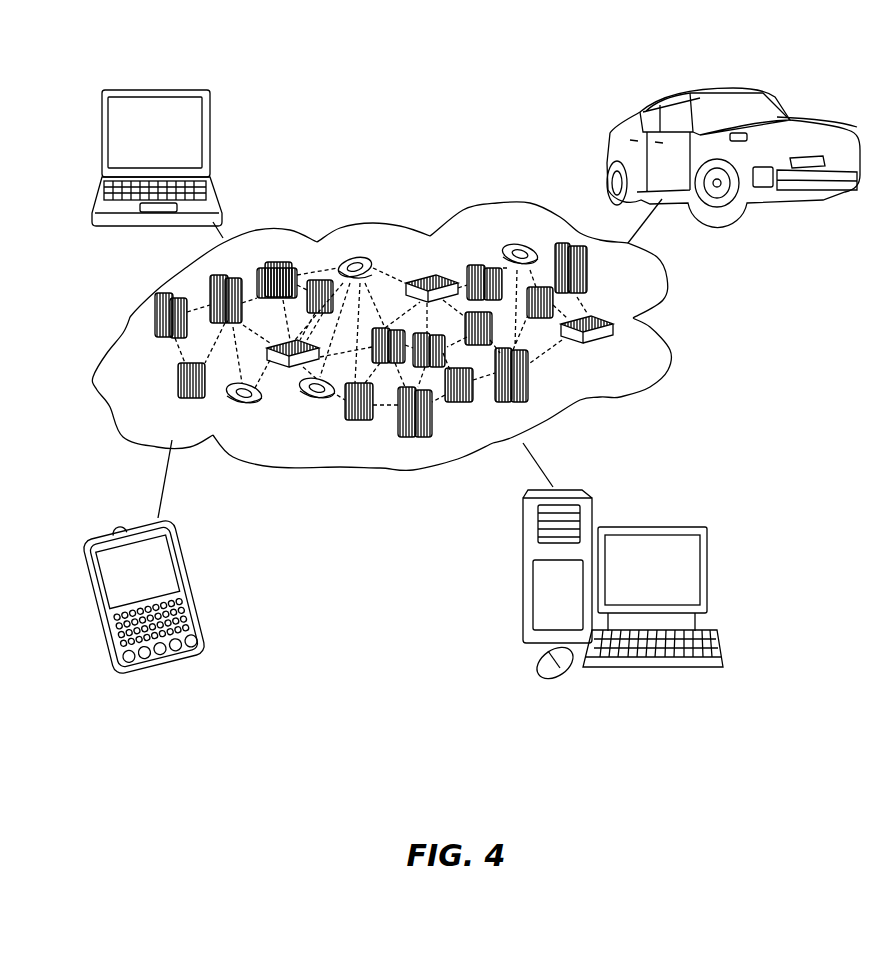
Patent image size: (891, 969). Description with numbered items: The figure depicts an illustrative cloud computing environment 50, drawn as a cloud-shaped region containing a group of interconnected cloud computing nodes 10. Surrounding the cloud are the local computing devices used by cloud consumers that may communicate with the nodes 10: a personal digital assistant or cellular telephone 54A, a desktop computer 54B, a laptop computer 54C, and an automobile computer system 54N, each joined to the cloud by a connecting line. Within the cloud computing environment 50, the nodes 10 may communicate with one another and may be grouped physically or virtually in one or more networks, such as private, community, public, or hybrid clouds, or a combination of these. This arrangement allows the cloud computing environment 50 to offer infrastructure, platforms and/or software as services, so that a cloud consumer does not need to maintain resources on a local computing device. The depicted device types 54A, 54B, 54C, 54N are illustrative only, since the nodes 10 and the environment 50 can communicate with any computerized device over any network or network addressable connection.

The cloud computing node 10 is at (630, 365).
The cloud computing environment 50 is at (668, 278).
The personal digital assistant or cellular telephone 54A is at (188, 567).
The desktop computer 54B is at (708, 568).
The laptop computer 54C is at (213, 137).
The automobile computer system 54N is at (763, 108).